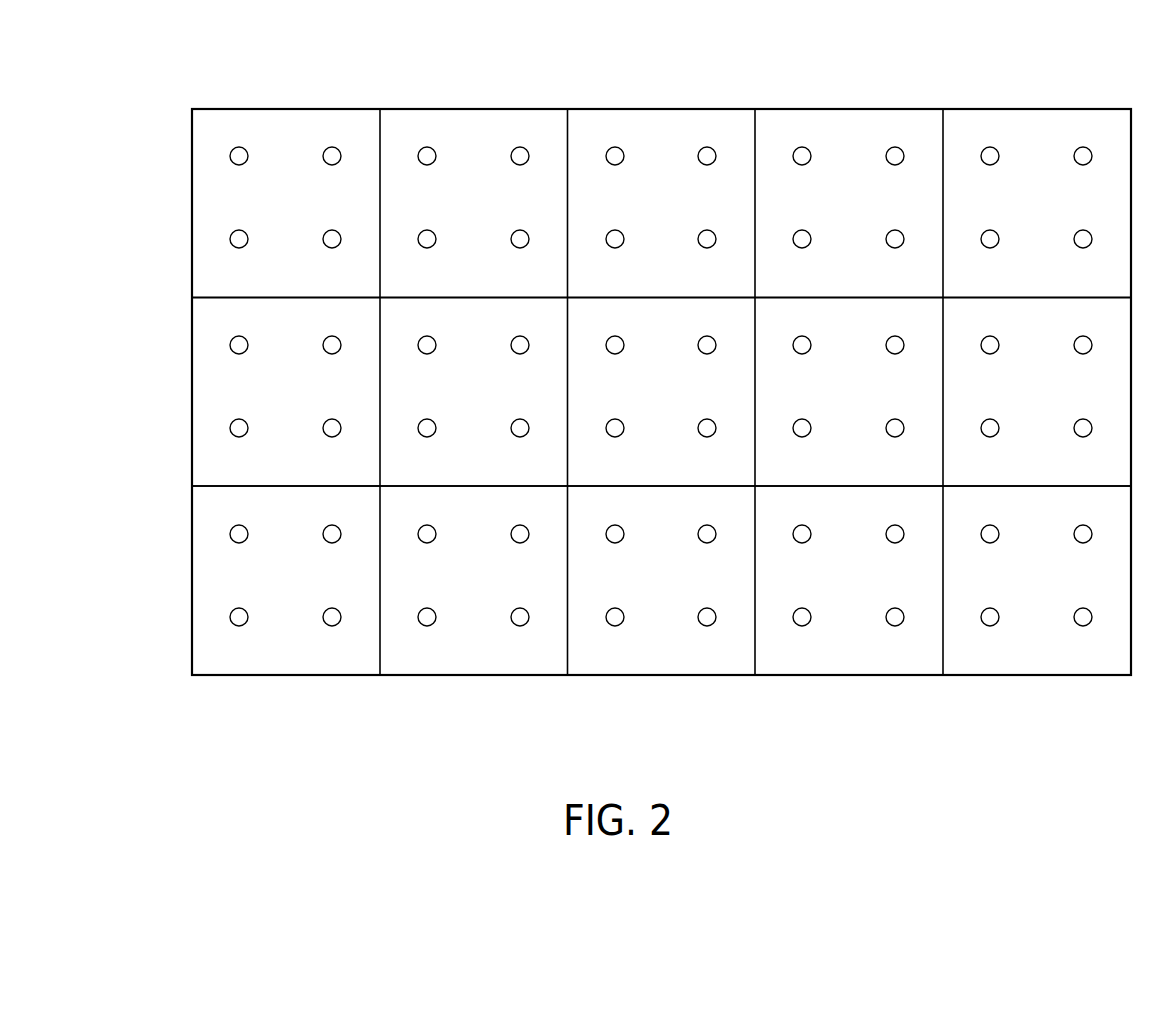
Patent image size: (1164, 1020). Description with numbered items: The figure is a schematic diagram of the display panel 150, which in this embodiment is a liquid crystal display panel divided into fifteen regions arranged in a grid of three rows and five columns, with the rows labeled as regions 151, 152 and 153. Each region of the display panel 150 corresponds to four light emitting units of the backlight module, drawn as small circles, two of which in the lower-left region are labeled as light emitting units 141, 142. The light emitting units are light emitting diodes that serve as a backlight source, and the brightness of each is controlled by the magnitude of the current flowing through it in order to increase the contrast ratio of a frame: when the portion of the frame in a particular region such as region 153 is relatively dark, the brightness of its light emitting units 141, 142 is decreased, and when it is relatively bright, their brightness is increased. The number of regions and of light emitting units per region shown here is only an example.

The display panel 150 is at (1114, 108).
The region 151 is at (192, 203).
The region 152 is at (192, 392).
The region 153 is at (192, 581).
The light emitting unit 141 is at (236, 627).
The light emitting unit 142 is at (329, 627).